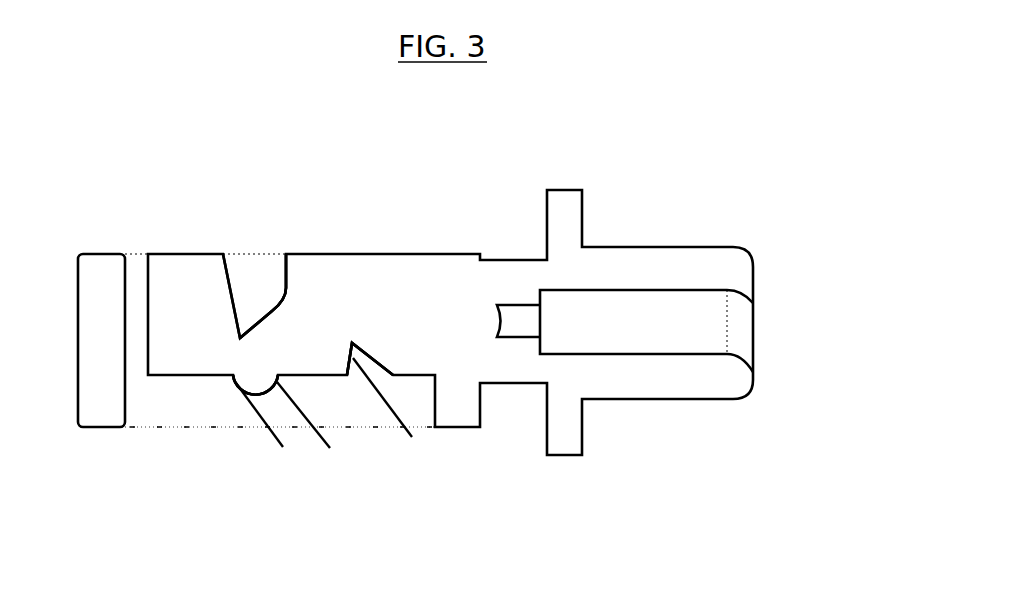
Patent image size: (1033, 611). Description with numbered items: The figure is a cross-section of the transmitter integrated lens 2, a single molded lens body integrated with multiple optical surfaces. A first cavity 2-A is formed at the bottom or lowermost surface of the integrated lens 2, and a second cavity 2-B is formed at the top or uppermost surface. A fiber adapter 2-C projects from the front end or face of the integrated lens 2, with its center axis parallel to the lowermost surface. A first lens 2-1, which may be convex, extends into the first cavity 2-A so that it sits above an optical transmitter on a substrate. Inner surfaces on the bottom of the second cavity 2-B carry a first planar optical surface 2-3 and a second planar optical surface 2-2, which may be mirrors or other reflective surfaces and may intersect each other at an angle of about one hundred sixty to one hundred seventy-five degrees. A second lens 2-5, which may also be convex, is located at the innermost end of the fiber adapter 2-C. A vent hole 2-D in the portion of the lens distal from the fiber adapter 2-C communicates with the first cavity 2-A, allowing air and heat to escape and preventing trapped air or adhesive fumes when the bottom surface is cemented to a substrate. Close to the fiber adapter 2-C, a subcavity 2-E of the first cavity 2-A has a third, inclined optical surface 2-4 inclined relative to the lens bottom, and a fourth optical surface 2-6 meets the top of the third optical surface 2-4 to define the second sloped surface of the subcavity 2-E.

The transmitter integrated lens 2 is at (457, 121).
The first lens 2-1 is at (283, 447).
The second planar optical surface 2-2 is at (400, 480).
The first planar optical surface 2-3 is at (263, 307).
The third optical surface 2-4 is at (412, 437).
The second lens 2-5 is at (500, 318).
The fourth optical surface 2-6 is at (368, 347).
The first cavity 2-A is at (167, 410).
The second cavity 2-B is at (235, 277).
The fiber adapter 2-C is at (620, 330).
The vent hole 2-D is at (130, 277).
The subcavity 2-E is at (365, 366).